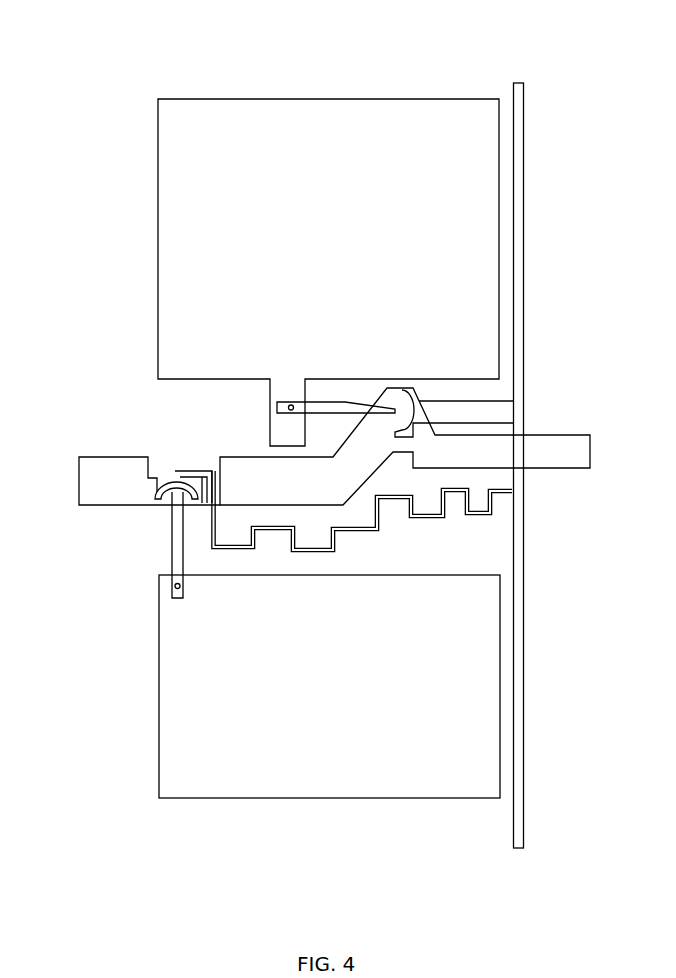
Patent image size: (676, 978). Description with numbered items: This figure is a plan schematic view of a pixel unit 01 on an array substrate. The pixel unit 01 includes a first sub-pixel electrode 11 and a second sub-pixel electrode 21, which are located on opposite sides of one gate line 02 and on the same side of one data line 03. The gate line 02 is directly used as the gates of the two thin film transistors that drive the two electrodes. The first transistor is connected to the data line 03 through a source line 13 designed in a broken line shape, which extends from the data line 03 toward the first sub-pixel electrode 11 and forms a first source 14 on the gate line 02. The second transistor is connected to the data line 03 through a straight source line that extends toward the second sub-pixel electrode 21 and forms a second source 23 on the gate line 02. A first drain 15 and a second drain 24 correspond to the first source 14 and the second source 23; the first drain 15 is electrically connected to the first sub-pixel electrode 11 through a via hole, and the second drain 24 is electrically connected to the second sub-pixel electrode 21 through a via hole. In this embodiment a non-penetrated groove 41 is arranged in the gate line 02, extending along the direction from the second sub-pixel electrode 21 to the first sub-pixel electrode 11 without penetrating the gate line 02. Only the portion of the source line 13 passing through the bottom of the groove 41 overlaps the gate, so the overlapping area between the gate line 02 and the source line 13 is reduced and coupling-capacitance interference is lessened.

The pixel unit 01 is at (74, 85).
The gate line 02 is at (78, 469).
The data line 03 is at (525, 82).
The first sub-pixel electrode 11 is at (266, 798).
The source line 13 is at (360, 530).
The first source 14 is at (156, 492).
The first drain 15 is at (177, 503).
The second sub-pixel electrode 21 is at (267, 99).
The second source 23 is at (399, 407).
The second drain 24 is at (382, 405).
The groove 41 is at (203, 488).